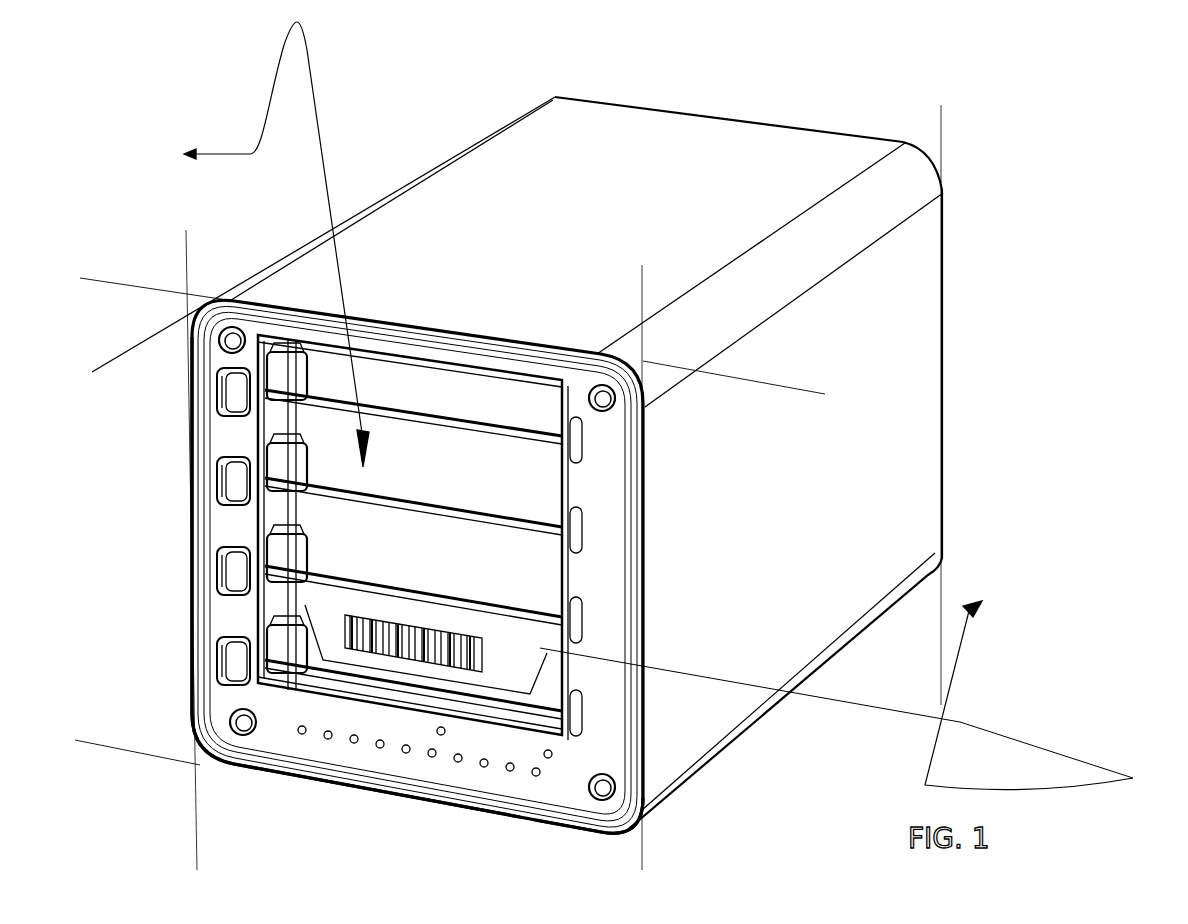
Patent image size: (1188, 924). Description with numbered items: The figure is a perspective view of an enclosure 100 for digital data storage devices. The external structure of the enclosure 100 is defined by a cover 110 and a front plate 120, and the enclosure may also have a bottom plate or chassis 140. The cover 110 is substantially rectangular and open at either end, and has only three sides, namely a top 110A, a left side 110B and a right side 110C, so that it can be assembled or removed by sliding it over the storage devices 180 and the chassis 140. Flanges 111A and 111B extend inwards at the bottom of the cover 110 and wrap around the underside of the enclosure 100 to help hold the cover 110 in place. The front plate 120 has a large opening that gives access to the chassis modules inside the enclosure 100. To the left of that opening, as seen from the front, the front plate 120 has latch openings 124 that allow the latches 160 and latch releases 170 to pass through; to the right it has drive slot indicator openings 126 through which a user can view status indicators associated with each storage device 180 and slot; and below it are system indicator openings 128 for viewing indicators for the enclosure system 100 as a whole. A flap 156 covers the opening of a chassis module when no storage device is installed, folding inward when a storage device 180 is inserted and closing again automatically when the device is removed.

The enclosure 100 is at (1070, 91).
The cover 110 is at (930, 272).
The top 110A is at (605, 227).
The left side 110B is at (195, 703).
The right side 110C is at (816, 505).
The flange 111A is at (265, 770).
The flange 111B is at (563, 823).
The front plate 120 is at (271, 728).
The latch openings 124 is at (222, 373).
The drive slot indicator openings 126 is at (594, 576).
The system indicator openings 128 is at (439, 759).
The bottom plate/chassis 140 is at (397, 802).
The flap 156 is at (557, 383).
The latches 160 is at (287, 515).
The latch releases 170 is at (226, 415).
The storage devices 180 is at (535, 648).